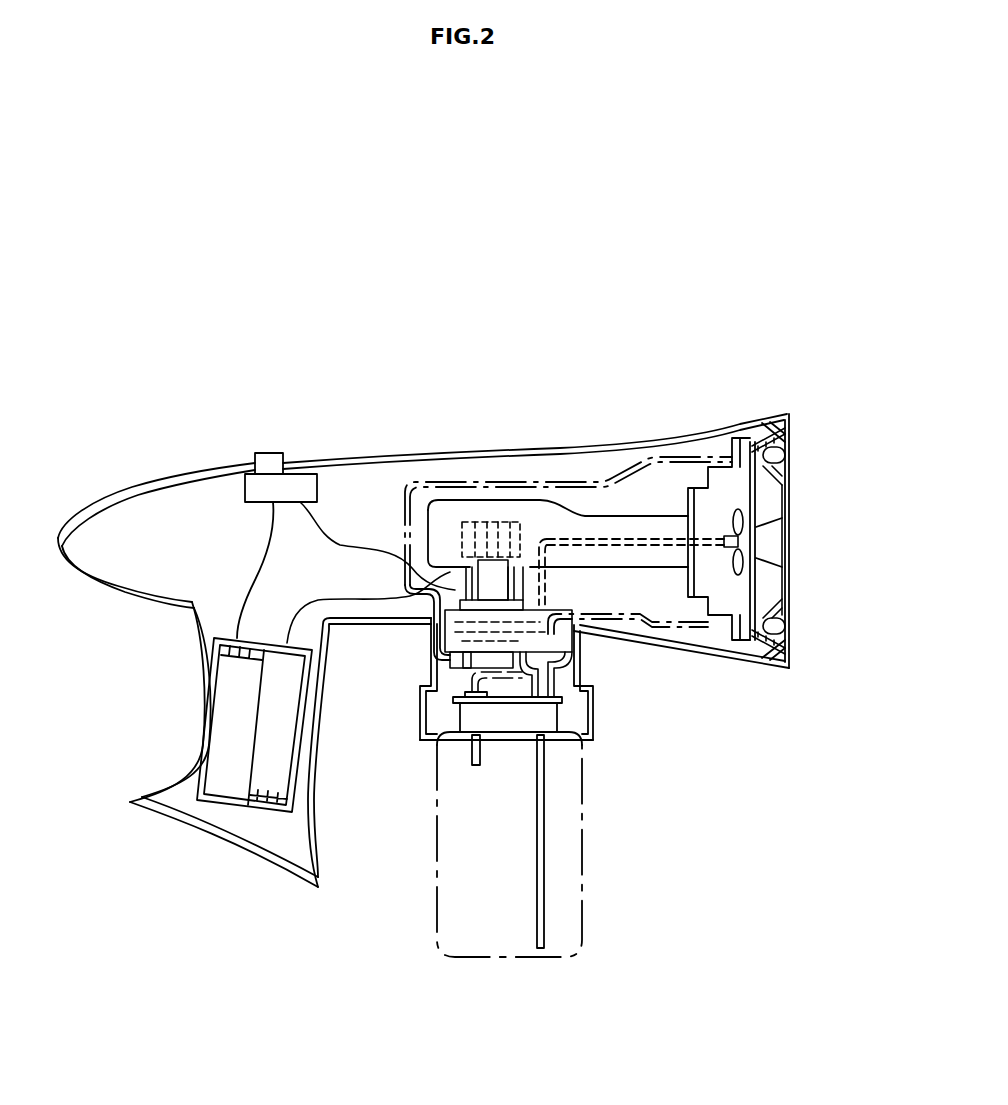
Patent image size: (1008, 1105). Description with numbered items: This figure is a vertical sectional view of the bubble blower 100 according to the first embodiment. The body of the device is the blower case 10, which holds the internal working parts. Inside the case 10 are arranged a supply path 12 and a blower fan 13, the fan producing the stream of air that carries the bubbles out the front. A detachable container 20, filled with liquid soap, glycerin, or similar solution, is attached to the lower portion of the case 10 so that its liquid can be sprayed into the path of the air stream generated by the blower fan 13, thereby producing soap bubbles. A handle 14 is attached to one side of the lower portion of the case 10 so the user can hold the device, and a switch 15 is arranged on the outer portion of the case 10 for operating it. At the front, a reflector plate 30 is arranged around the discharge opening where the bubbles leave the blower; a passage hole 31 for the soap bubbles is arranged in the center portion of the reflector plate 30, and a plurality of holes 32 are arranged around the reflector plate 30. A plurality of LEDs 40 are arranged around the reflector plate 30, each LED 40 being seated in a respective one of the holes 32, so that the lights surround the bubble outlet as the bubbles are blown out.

The bubble blower 100 is at (240, 313).
The blower case 10 is at (174, 480).
The supply path 12 is at (448, 483).
The blower fan 13 is at (503, 528).
The handle 14 is at (183, 750).
The switch 15 is at (268, 453).
The detachable container 20 is at (582, 866).
The reflector plate 30 is at (787, 482).
The passage hole 31 is at (787, 545).
The holes for LEDs 32 is at (787, 455).
The LEDs 40 is at (787, 438).